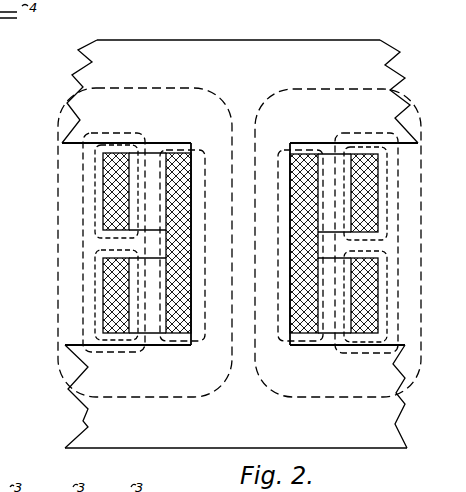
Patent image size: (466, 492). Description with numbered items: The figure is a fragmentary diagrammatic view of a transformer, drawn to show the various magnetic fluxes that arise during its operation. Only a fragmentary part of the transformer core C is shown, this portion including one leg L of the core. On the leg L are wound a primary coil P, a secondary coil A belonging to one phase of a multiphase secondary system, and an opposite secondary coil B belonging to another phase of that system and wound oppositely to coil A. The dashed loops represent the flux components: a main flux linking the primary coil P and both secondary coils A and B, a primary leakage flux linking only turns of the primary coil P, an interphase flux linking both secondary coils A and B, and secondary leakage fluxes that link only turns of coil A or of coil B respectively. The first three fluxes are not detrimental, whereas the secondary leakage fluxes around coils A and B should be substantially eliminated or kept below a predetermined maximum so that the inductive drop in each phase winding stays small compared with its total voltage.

The transformer core C is at (241, 42).
The primary coil P is at (303, 346).
The leg L is at (246, 321).
The secondary coil A is at (103, 169).
The opposite secondary coil B is at (103, 293).